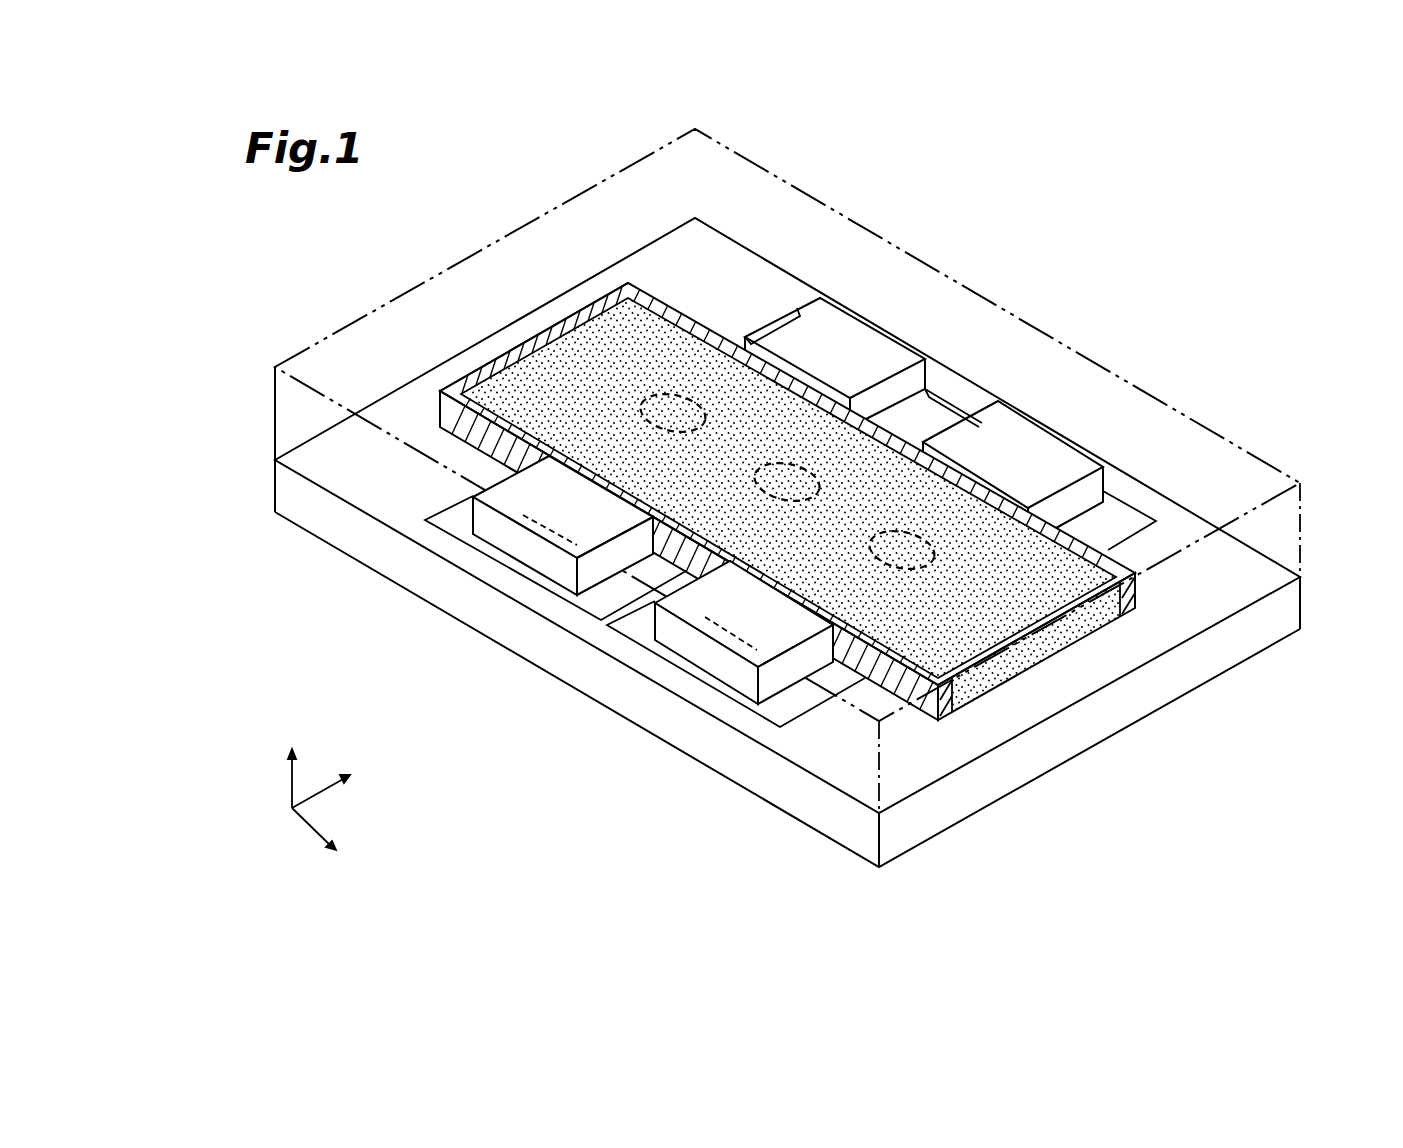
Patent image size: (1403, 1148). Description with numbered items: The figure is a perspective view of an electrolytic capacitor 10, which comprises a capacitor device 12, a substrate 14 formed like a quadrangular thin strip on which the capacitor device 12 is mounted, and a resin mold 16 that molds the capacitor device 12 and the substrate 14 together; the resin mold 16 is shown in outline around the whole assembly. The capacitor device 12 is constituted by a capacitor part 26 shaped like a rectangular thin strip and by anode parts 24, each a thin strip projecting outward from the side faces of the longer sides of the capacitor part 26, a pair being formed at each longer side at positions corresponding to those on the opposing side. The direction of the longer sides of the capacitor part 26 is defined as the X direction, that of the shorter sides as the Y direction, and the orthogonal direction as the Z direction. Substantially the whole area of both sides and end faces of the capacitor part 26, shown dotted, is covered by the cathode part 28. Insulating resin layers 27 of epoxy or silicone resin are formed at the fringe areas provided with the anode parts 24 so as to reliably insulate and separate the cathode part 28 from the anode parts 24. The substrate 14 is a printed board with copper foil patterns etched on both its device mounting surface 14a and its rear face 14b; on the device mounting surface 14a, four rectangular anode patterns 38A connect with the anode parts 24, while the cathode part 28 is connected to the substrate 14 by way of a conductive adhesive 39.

The electrolytic capacitor 10 is at (1140, 251).
The capacitor device 12 is at (533, 328).
The substrate 14 is at (1300, 605).
The device mounting surface 14a is at (1250, 572).
The rear face 14b is at (1262, 630).
The resin mold 16 is at (757, 163).
The anode parts 24 is at (835, 335).
The capacitor part 26 is at (583, 308).
The insulating resin layers 27 is at (650, 292).
The cathode part 28 is at (520, 367).
The anode patterns 38A is at (931, 405).
The conductive adhesive 39 is at (650, 395).